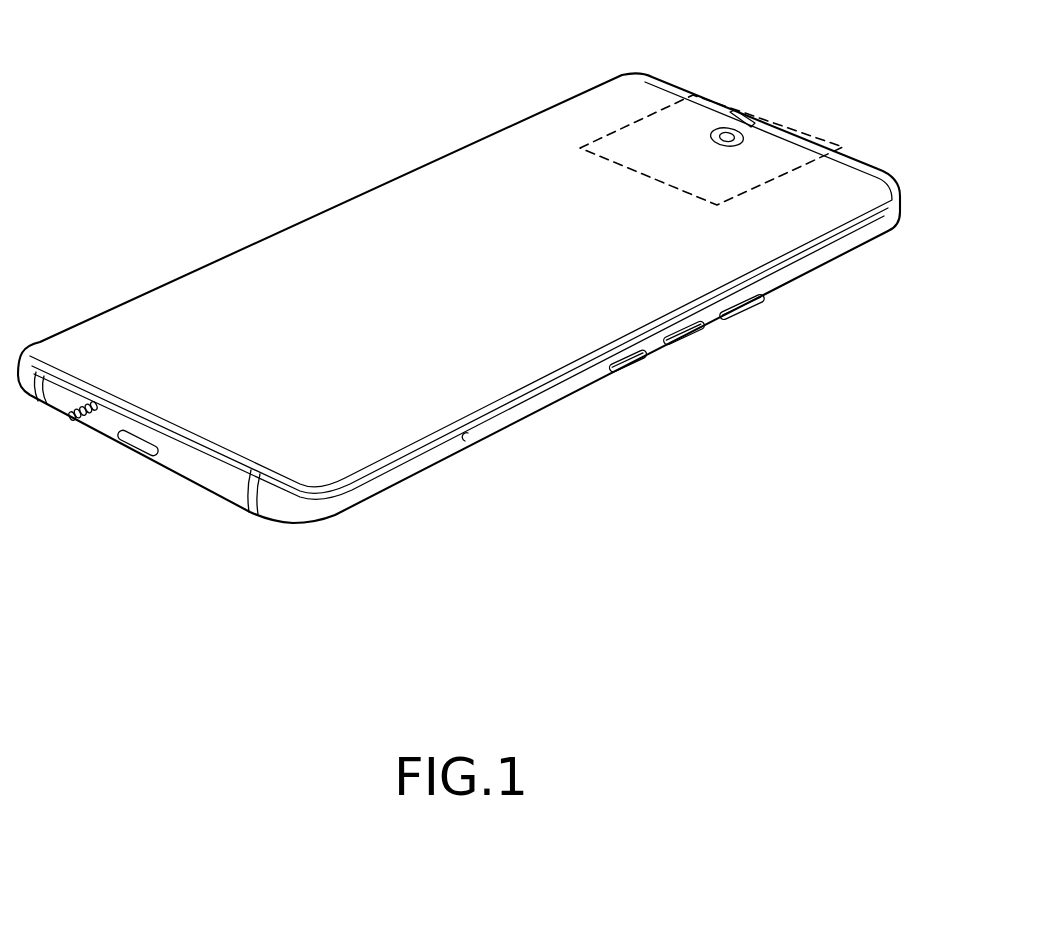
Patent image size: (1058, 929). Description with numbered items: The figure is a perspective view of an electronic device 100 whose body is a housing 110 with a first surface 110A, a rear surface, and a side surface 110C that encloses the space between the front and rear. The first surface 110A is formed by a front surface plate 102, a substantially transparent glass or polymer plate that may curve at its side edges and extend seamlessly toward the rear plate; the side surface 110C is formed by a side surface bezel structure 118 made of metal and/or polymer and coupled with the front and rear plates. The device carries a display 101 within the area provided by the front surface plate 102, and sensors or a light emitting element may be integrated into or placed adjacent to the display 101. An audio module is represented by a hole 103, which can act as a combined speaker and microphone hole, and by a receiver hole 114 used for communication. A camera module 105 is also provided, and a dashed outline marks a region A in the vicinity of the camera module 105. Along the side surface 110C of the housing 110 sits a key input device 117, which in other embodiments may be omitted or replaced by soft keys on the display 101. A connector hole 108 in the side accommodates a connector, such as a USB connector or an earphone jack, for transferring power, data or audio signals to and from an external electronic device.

The electronic device 100 is at (291, 137).
The display 101 is at (267, 305).
The front surface plate 102 is at (879, 173).
The audio module hole 103 is at (78, 425).
The camera module 105 is at (748, 140).
The connector hole 108 is at (146, 442).
The housing 110 is at (409, 172).
The first surface 110A is at (616, 146).
The side surface 110C is at (464, 438).
The receiver hole 114 is at (752, 123).
The key input device 117 is at (628, 363).
The side surface bezel structure 118 is at (510, 424).
The camera region A is at (705, 92).